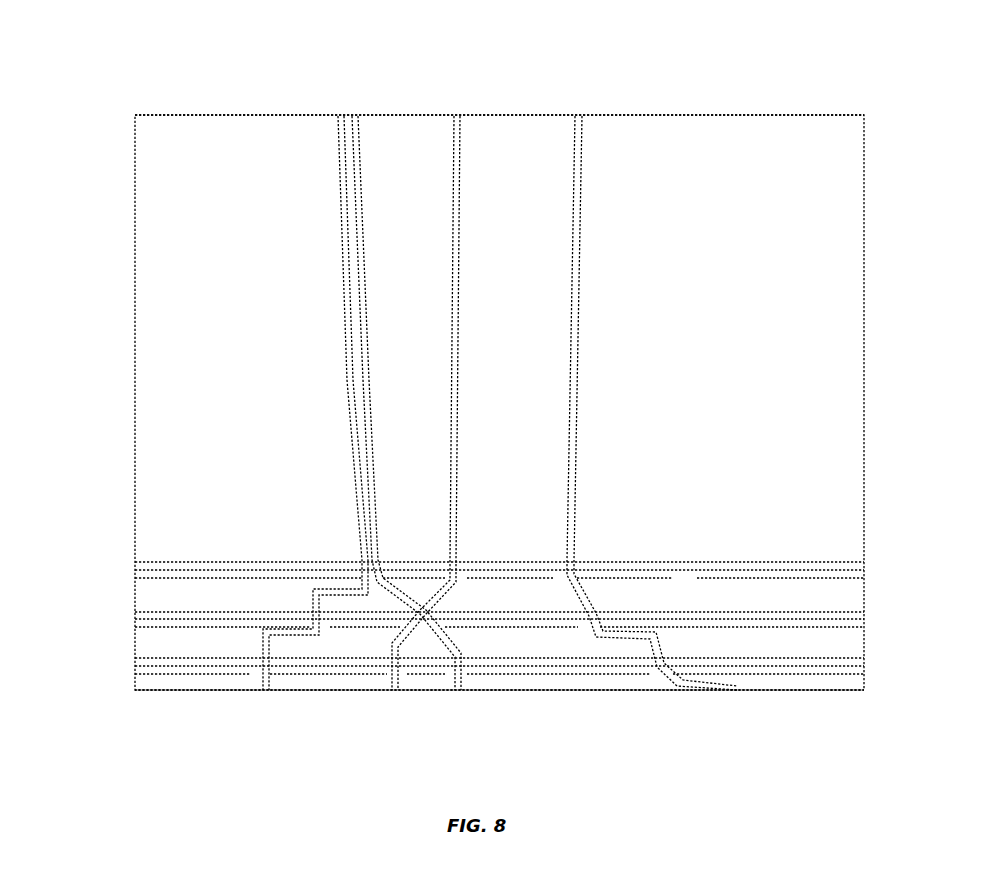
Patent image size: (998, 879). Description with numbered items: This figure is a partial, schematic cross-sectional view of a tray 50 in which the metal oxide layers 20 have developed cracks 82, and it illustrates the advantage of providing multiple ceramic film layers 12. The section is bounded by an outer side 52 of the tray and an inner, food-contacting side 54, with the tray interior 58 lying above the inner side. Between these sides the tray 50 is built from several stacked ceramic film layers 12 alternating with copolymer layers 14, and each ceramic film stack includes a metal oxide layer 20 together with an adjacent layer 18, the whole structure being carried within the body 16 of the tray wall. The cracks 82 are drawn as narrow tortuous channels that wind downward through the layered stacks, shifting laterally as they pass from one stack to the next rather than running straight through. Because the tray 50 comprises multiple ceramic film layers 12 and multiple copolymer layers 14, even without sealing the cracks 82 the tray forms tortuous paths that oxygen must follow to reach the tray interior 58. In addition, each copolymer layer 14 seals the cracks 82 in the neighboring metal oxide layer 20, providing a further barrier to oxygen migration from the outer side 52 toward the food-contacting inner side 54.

The ceramic film layer 12 is at (935, 560).
The copolymer layer 14 is at (864, 562).
The substrate body 16 is at (865, 349).
The second layer 18 is at (864, 580).
The metal oxide layer 20 is at (864, 570).
The tray 50 is at (747, 56).
The outer side 52 is at (606, 690).
The inner side 54 is at (497, 113).
The tray interior 58 is at (411, 55).
The cracks 82 is at (256, 692).